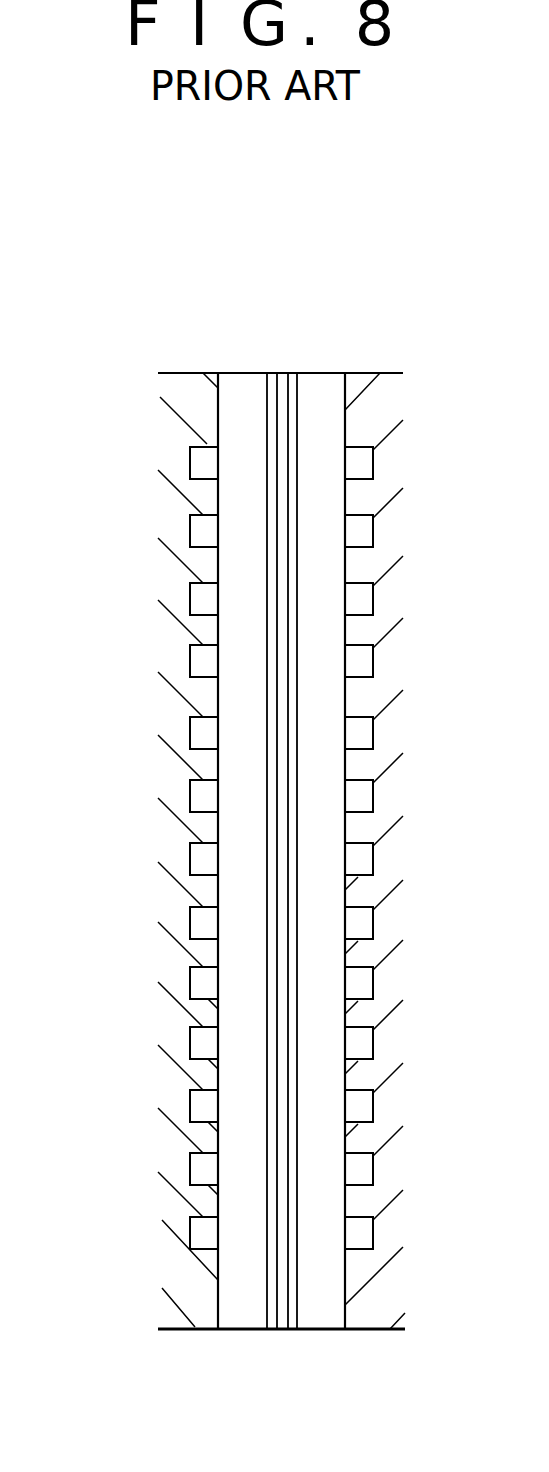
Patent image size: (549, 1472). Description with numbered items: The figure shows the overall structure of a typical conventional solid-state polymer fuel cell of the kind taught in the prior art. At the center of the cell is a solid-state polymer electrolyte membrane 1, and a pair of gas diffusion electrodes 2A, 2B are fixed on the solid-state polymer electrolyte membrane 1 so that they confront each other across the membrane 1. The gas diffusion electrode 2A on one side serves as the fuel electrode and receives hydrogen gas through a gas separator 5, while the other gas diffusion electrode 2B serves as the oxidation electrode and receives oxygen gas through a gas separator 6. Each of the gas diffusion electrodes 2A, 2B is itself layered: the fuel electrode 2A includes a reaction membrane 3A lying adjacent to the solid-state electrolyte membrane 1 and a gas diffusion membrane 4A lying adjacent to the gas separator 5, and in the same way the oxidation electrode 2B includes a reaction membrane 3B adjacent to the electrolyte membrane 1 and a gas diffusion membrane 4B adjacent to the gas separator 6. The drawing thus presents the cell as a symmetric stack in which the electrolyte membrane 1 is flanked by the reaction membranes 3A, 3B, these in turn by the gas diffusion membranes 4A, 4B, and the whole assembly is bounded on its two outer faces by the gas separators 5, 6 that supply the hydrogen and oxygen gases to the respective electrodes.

The solid-state polymer electrolyte membrane 1 is at (284, 380).
The gas diffusion electrode 2A is at (244, 255).
The gas diffusion electrode 2B is at (443, 255).
The reaction membrane 3A is at (270, 377).
The reaction membrane 3B is at (297, 375).
The gas diffusion membrane 4A is at (233, 387).
The gas diffusion membrane 4B is at (328, 385).
The gas separator 5 is at (185, 395).
The gas separator 6 is at (377, 402).